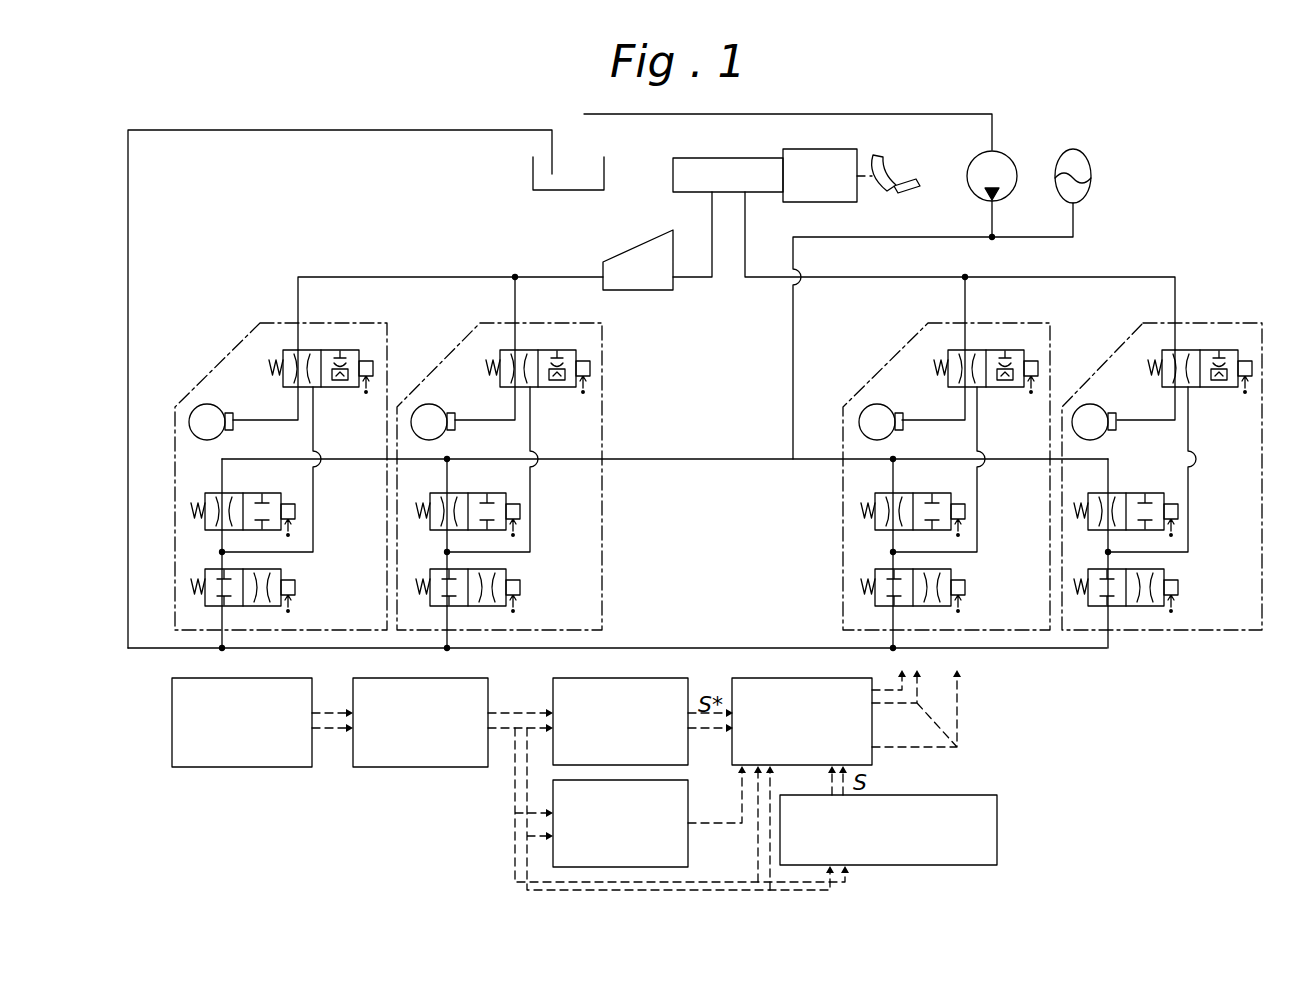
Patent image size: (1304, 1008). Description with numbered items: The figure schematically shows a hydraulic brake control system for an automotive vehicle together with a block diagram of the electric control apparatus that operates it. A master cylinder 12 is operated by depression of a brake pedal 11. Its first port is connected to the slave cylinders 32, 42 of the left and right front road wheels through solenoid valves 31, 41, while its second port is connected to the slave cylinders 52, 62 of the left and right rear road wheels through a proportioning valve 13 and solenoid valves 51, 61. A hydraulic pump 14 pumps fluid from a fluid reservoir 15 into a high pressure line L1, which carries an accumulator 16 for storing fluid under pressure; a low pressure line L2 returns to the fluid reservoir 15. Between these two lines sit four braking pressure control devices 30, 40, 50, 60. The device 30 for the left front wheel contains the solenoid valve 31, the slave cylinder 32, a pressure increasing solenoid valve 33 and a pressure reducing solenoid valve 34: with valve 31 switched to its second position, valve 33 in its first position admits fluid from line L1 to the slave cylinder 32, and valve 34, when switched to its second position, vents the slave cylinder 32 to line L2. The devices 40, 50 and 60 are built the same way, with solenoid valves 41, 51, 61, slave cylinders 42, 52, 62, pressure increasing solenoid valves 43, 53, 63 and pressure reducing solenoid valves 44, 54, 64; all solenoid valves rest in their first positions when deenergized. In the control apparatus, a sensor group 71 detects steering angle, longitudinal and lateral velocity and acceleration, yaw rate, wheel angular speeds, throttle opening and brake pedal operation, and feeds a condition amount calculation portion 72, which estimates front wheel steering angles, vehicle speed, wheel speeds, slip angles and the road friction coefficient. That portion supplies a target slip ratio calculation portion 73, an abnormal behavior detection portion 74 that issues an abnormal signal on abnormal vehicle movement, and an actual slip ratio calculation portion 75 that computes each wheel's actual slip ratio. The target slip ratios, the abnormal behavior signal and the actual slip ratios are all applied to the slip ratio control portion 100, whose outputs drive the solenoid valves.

The brake pedal 11 is at (891, 174).
The master cylinder 12 is at (765, 166).
The proportioning valve 13 is at (630, 252).
The hydraulic pump 14 is at (1007, 170).
The fluid reservoir 15 is at (541, 173).
The accumulator 16 is at (1091, 171).
The braking pressure control device 30 is at (944, 464).
The solenoid valve 31 is at (986, 346).
The slave cylinder 32 is at (891, 408).
The pressure increasing solenoid valve 33 is at (913, 501).
The pressure reducing solenoid valve 34 is at (932, 588).
The braking pressure control device 40 is at (1162, 474).
The solenoid valve 41 is at (1200, 346).
The slave cylinder 42 is at (1104, 408).
The pressure increasing solenoid valve 43 is at (1126, 501).
The pressure reducing solenoid valve 44 is at (1145, 588).
The braking pressure control device 50 is at (279, 475).
The solenoid valve 51 is at (321, 346).
The slave cylinder 52 is at (222, 408).
The pressure increasing solenoid valve 53 is at (243, 501).
The pressure reducing solenoid valve 54 is at (259, 588).
The braking pressure control device 60 is at (499, 464).
The solenoid valve 61 is at (538, 346).
The slave cylinder 62 is at (443, 408).
The pressure increasing solenoid valve 63 is at (468, 501).
The pressure reducing solenoid valve 64 is at (483, 588).
The sensor group 71 is at (242, 744).
The condition amount calculation portion 72 is at (420, 744).
The target slip ratio calculation portion 73 is at (620, 710).
The abnormal behavior detection portion 74 is at (640, 823).
The actual slip ratio calculation portion 75 is at (921, 830).
The slip ratio control portion 100 is at (802, 710).
The high pressure line L1 is at (665, 480).
The low pressure line L2 is at (617, 629).